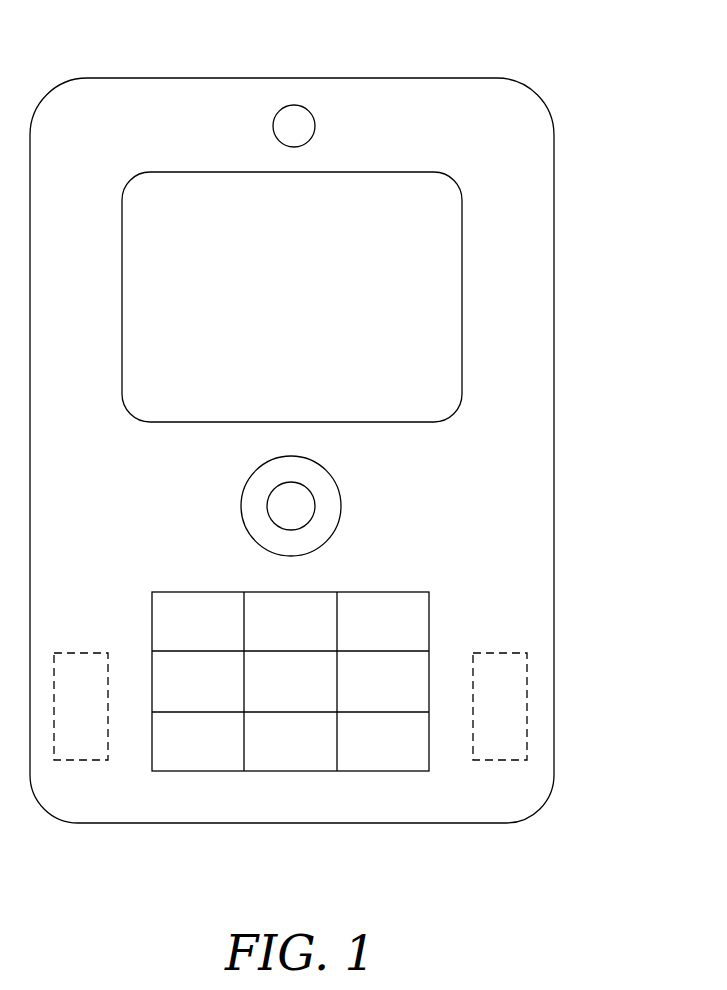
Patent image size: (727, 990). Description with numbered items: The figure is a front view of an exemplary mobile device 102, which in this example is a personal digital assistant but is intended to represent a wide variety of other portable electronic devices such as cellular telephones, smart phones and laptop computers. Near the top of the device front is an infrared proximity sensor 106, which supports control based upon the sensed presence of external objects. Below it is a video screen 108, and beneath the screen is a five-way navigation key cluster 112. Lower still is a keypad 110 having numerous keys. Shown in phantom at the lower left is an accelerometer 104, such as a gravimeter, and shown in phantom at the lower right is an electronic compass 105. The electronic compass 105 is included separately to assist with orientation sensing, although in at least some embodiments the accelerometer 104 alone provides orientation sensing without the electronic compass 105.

The mobile device 102 is at (627, 63).
The accelerometer 104 is at (82, 663).
The electronic compass 105 is at (500, 663).
The infrared proximity sensor 106 is at (300, 125).
The video screen 108 is at (428, 399).
The keypad 110 is at (288, 758).
The navigation key cluster 112 is at (330, 506).